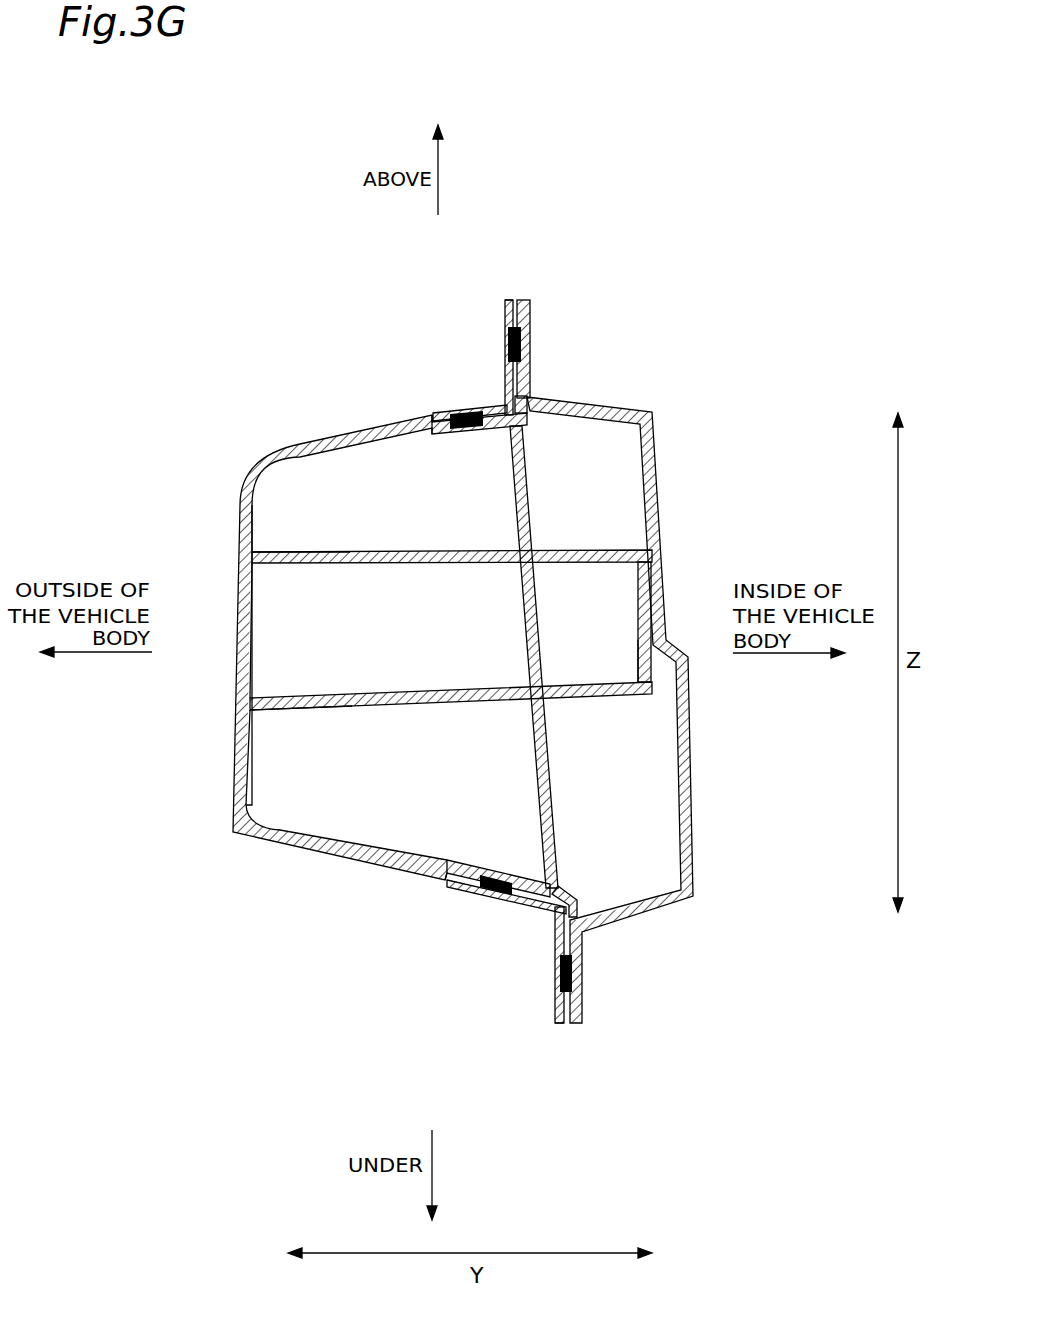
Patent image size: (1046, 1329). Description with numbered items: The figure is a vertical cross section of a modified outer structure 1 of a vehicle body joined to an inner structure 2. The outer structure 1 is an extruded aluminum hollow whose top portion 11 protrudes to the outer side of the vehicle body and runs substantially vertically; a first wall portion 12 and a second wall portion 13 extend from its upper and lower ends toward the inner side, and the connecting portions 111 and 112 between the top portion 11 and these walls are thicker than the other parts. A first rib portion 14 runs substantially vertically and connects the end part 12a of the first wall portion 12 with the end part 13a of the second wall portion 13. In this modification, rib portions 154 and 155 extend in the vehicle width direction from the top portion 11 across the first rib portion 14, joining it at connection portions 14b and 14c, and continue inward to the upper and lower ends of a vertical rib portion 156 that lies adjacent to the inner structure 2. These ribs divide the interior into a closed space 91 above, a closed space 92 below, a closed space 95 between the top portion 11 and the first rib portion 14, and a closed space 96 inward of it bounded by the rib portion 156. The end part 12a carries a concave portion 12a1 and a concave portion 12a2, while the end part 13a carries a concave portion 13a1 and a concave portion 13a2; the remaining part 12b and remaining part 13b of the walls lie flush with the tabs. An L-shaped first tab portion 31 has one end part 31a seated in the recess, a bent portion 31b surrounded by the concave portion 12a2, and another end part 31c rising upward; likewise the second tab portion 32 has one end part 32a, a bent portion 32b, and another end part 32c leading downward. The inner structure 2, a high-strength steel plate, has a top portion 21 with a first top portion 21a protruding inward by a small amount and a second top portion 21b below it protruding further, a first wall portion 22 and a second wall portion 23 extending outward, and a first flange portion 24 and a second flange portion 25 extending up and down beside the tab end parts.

The outer structure 1 is at (283, 370).
The inner structure 2 is at (701, 360).
The top portion 11 is at (240, 567).
The first wall portion 12 is at (323, 418).
The second wall portion 13 is at (330, 879).
The first rib portion 14 is at (523, 468).
The top portion 21 is at (692, 426).
The first wall portion 22 is at (618, 405).
The second wall portion 23 is at (655, 914).
The first flange portion 24 is at (532, 322).
The second flange portion 25 is at (583, 1012).
The first tab portion 31 is at (490, 346).
The second tab portion 32 is at (532, 985).
The closed space 91 is at (290, 541).
The closed space 92 is at (290, 780).
The closed space 95 is at (290, 680).
The closed space 96 is at (645, 668).
The connecting portion 111 is at (258, 456).
The connecting portion 112 is at (236, 835).
The rib portion 154 is at (347, 551).
The rib portion 155 is at (352, 706).
The rib portion 156 is at (650, 566).
The end part 12a is at (470, 437).
The concave portion 12a1 is at (432, 440).
The concave portion 12a2 is at (528, 405).
The remaining part 12b is at (364, 433).
The end part 13a is at (494, 873).
The concave portion 13a1 is at (446, 866).
The concave portion 13a2 is at (574, 896).
The remaining part 13b is at (352, 862).
The connection portion 14b is at (532, 553).
The connection portion 14c is at (540, 688).
The first top portion 21a is at (667, 515).
The second top portion 21b is at (692, 778).
The one end part 31a is at (448, 410).
The bent portion 31b is at (504, 403).
The another end part 31c is at (509, 300).
The one end part 32a is at (462, 888).
The bent portion 32b is at (553, 913).
The another end part 32c is at (557, 1024).